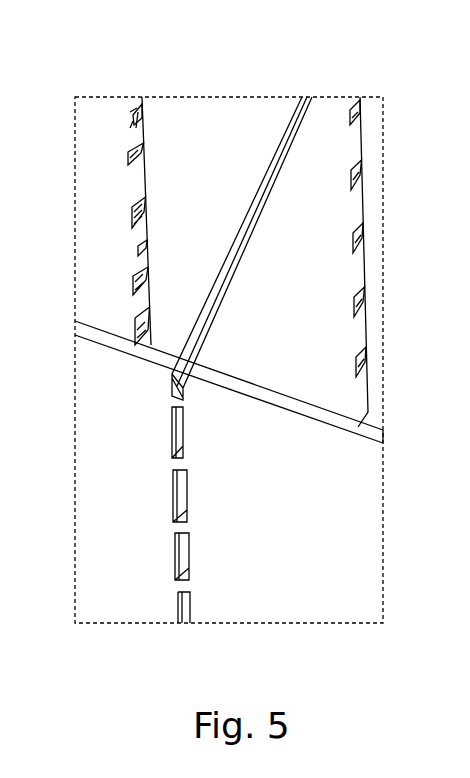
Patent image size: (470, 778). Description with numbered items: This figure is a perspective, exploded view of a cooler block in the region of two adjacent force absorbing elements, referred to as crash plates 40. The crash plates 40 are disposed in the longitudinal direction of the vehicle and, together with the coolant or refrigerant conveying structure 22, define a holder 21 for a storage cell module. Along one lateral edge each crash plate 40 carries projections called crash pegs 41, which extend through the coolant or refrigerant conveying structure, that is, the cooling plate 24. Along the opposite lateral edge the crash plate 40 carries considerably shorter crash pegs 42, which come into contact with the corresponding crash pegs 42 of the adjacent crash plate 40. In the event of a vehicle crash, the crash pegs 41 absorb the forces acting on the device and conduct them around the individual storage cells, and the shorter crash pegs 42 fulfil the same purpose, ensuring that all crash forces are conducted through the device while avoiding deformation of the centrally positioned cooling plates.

The holder 21 is at (176, 128).
The coolant or refrigerant conveying structure 22 is at (293, 110).
The cooling plate 24 is at (94, 185).
The crash plate 40 is at (255, 118).
The crash pegs 41 is at (140, 120).
The crash pegs 42 is at (174, 461).